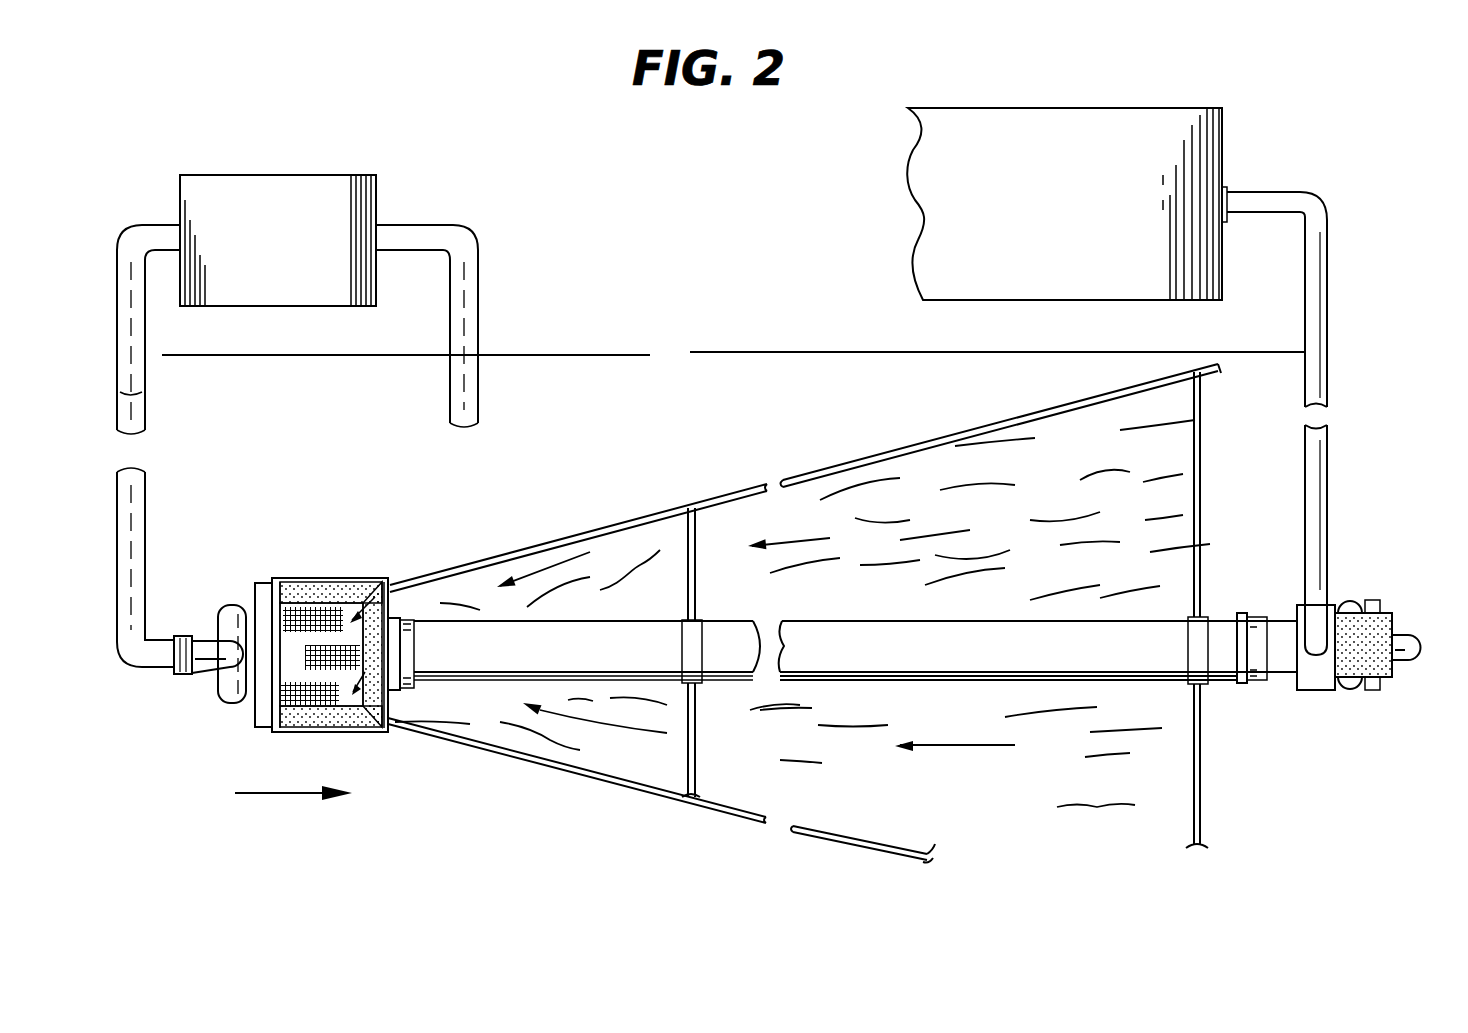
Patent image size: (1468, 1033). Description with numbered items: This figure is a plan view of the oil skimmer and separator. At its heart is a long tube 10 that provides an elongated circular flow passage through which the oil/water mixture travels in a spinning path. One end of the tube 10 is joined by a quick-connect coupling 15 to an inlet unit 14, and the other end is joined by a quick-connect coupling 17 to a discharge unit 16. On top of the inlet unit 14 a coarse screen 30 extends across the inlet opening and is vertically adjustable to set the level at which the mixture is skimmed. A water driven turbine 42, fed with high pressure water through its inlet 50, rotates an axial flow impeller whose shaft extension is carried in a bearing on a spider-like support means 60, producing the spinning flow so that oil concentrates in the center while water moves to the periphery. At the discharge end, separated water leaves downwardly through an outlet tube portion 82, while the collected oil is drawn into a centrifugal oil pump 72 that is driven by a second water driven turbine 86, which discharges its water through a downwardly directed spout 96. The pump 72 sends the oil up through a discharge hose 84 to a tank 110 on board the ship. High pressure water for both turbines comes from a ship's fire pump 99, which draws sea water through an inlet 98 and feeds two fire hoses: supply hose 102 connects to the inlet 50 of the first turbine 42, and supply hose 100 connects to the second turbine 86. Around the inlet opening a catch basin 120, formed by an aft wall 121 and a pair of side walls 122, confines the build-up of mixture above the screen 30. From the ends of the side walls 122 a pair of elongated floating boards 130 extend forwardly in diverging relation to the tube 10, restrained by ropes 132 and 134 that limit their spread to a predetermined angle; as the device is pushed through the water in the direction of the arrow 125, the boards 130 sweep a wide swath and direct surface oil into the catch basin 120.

The tube 10 is at (1100, 628).
The inlet unit 14 is at (199, 651).
The quick-connect coupling 15 is at (430, 675).
The discharge unit 16 is at (1325, 675).
The quick-connect coupling 17 is at (1247, 682).
The coarse screen 30 is at (346, 630).
The water driven turbine 42 is at (225, 607).
The inlet 50 is at (185, 633).
The spider-like support means 60 is at (574, 665).
The centrifugal oil pump 72 is at (1317, 677).
The outlet tube portion 82 is at (1280, 618).
The discharge hose 84 is at (1329, 300).
The water driven turbine 86 is at (1353, 600).
The spout 96 is at (1407, 650).
The inlet 98 is at (470, 290).
The fire pump 99 is at (312, 185).
The fire hose 100 is at (130, 416).
The fire hose 102 is at (142, 500).
The tank 110 is at (1103, 107).
The catch basin 120 is at (272, 580).
The aft wall 121 is at (285, 628).
The side walls 122 is at (340, 731).
The arrow 125 is at (280, 793).
The elongated members 130 is at (797, 830).
The rope 132 is at (697, 741).
The rope 134 is at (1196, 481).